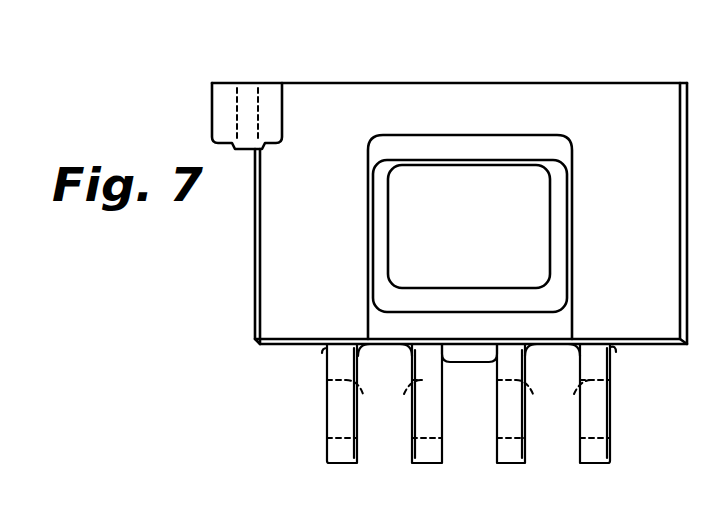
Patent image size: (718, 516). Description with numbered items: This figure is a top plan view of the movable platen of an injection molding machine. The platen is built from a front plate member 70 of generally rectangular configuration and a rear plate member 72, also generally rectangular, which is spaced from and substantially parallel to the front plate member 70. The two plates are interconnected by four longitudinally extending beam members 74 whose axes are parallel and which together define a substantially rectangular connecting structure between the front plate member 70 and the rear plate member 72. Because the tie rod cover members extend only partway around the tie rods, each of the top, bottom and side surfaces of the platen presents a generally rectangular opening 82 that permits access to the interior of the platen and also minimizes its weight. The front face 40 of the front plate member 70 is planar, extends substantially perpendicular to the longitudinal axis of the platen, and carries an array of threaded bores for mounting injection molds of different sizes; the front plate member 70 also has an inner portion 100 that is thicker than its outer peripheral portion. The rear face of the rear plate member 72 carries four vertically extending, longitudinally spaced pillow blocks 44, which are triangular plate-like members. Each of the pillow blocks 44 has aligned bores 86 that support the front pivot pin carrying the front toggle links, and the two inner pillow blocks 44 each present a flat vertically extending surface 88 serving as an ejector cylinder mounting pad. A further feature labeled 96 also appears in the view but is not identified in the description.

The front face 40 is at (355, 83).
The front plate member 70 is at (485, 94).
The mounting block 96 is at (213, 92).
The rectangular opening 82 is at (468, 163).
The rear plate member 72 is at (488, 318).
The beam members 74 is at (382, 217).
The pillow blocks 44 is at (353, 457).
The vertically extending surface 88 is at (411, 452).
The aligned bores 86 is at (468, 409).
The inner portion 100 is at (517, 512).